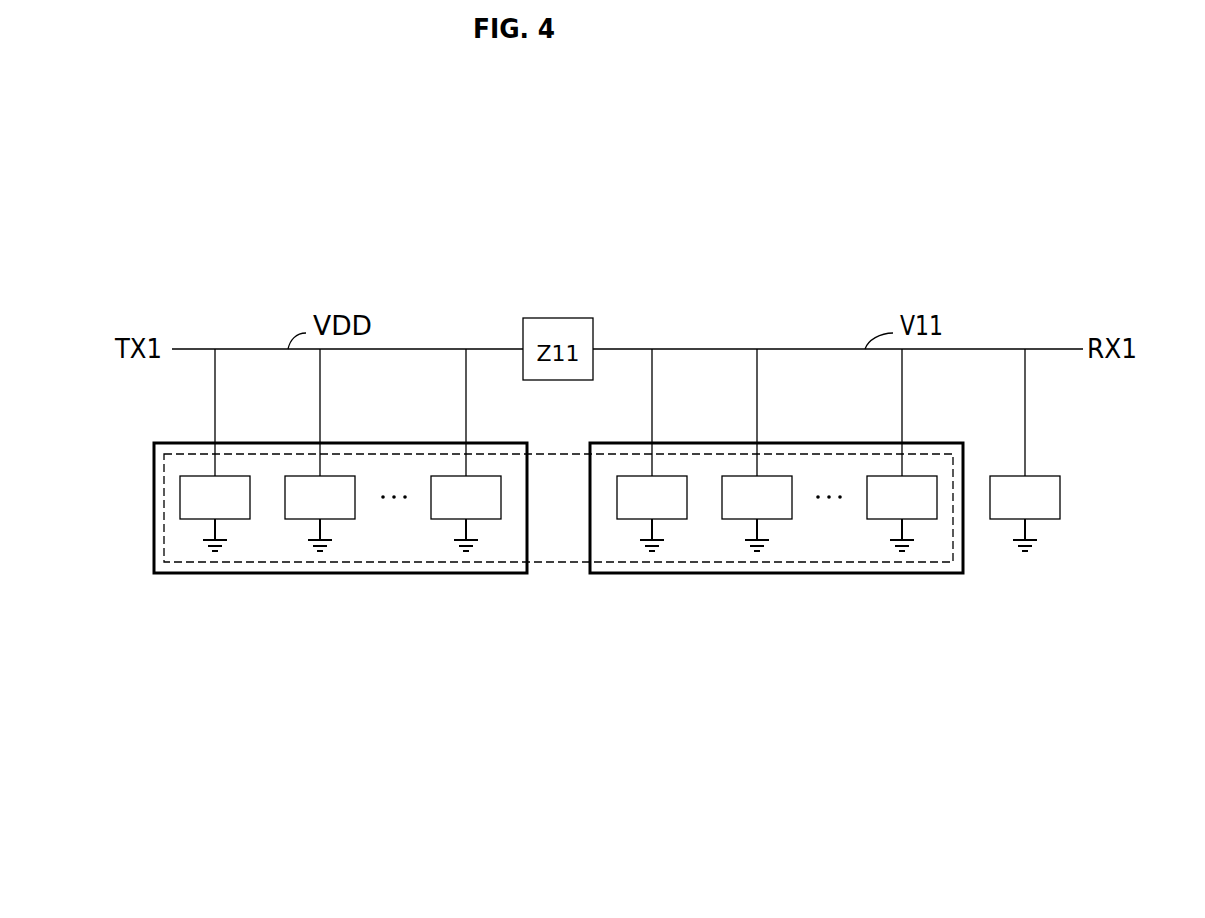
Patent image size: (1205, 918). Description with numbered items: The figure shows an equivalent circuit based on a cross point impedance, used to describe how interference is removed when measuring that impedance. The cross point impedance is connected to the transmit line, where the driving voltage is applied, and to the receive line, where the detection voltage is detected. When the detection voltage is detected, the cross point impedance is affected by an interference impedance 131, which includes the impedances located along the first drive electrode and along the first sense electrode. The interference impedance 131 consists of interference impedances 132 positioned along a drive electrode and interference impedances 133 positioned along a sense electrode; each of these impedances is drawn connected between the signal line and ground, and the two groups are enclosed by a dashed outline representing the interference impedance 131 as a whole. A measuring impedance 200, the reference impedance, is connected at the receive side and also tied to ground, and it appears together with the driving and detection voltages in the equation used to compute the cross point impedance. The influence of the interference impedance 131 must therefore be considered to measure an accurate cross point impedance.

The interference impedance 131 is at (558, 454).
The interference impedances 132 is at (172, 443).
The interference impedances 133 is at (933, 443).
The measuring impedance 200 is at (1040, 476).